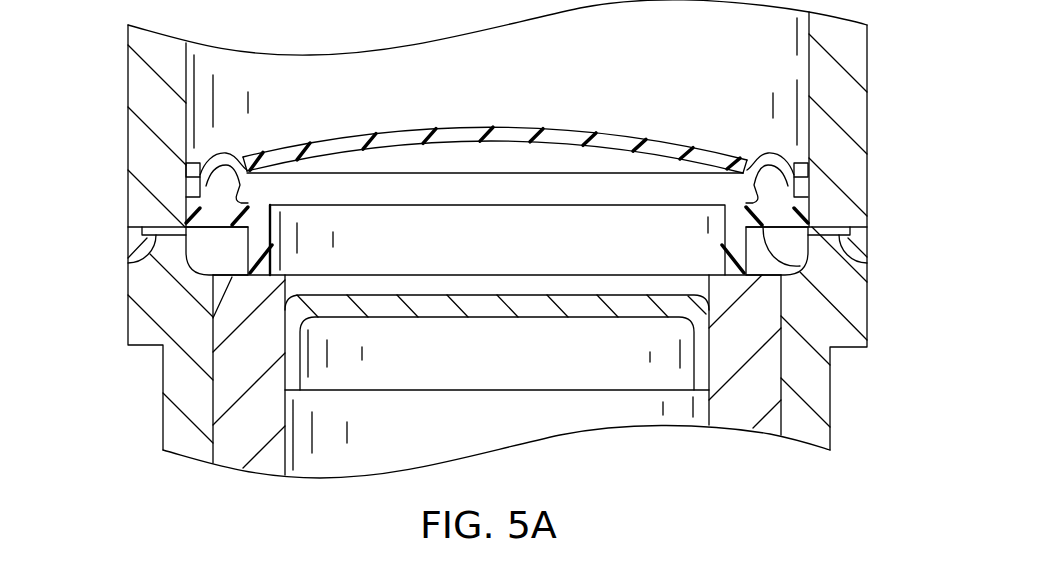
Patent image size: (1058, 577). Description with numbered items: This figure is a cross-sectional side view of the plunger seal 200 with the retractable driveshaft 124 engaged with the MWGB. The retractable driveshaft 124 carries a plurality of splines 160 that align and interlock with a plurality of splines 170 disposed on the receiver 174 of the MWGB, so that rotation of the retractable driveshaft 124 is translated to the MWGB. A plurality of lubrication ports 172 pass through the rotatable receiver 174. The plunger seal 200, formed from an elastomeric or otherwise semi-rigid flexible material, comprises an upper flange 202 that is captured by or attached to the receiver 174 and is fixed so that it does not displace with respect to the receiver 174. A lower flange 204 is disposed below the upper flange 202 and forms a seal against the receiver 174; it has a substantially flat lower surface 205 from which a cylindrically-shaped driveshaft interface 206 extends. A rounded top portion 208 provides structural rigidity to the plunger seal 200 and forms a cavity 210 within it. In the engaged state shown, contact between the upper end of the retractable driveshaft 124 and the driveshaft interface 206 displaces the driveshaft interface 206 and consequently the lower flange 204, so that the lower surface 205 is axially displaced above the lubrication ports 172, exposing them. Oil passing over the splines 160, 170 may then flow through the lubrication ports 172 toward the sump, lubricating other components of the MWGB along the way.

The retractable driveshaft 124 is at (727, 403).
The splines 160 is at (782, 423).
The splines 170 is at (774, 288).
The lubrication ports 172 is at (128, 258).
The receiver 174 is at (809, 73).
The plunger seal 200 is at (612, 136).
The upper flange 202 is at (807, 183).
The lower flange 204 is at (800, 212).
The lower surface 205 is at (797, 268).
The driveshaft interface 206 is at (733, 253).
The rounded top portion 208 is at (341, 139).
The cavity 210 is at (500, 163).